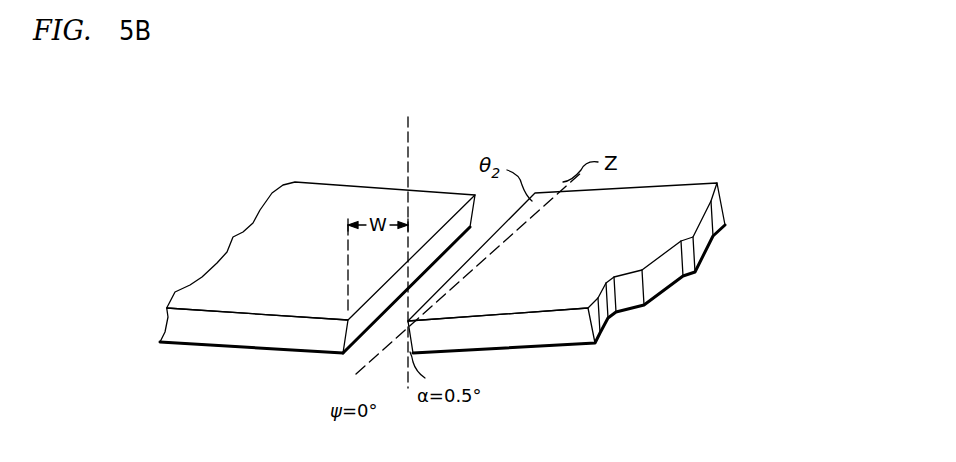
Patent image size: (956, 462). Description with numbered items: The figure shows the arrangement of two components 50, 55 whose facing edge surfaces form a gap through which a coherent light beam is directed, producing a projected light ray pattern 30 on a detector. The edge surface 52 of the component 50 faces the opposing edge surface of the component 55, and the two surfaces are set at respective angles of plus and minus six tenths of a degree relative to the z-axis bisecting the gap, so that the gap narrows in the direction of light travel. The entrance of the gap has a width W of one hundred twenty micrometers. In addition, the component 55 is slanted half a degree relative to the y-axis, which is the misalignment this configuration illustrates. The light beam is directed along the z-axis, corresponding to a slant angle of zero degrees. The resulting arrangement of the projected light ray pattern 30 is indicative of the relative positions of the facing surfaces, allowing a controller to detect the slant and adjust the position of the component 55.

The light ray pattern 30 is at (350, 381).
The component 50 is at (305, 246).
The edge surface 52 is at (374, 309).
The component 55 is at (643, 246).